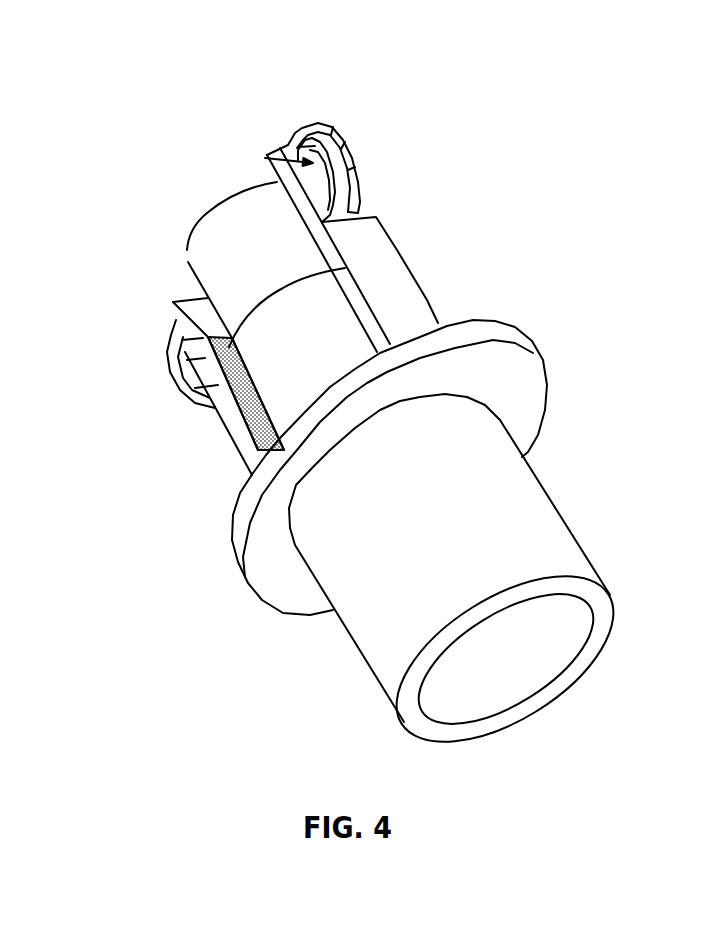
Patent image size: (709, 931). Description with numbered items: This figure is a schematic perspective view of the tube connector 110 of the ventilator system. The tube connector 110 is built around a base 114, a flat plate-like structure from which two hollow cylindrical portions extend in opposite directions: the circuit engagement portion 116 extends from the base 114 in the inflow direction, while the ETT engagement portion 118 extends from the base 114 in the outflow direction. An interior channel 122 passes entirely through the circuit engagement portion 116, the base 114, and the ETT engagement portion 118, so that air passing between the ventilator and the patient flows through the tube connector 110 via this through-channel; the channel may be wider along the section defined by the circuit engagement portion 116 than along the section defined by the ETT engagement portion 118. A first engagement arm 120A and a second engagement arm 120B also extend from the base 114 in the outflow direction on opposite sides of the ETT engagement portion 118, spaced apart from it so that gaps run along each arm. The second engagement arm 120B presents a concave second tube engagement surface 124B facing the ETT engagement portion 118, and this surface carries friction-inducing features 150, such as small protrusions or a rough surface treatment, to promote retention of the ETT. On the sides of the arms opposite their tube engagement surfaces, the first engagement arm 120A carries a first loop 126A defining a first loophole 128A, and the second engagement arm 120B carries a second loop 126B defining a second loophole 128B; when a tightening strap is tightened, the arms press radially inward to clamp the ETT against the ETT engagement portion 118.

The tube connector 110 is at (382, 117).
The base 114 is at (518, 387).
The circuit engagement portion 116 is at (491, 597).
The ETT engagement portion 118 is at (217, 230).
The first engagement arm 120A is at (421, 282).
The second engagement arm 120B is at (176, 434).
The interior channel 122 is at (504, 661).
The second tube engagement surface 124B is at (197, 302).
The first loop 126A is at (358, 166).
The second loop 126B is at (200, 392).
The first loophole 128A is at (266, 154).
The second loophole 128B is at (185, 365).
The friction-inducing features 150 is at (248, 395).